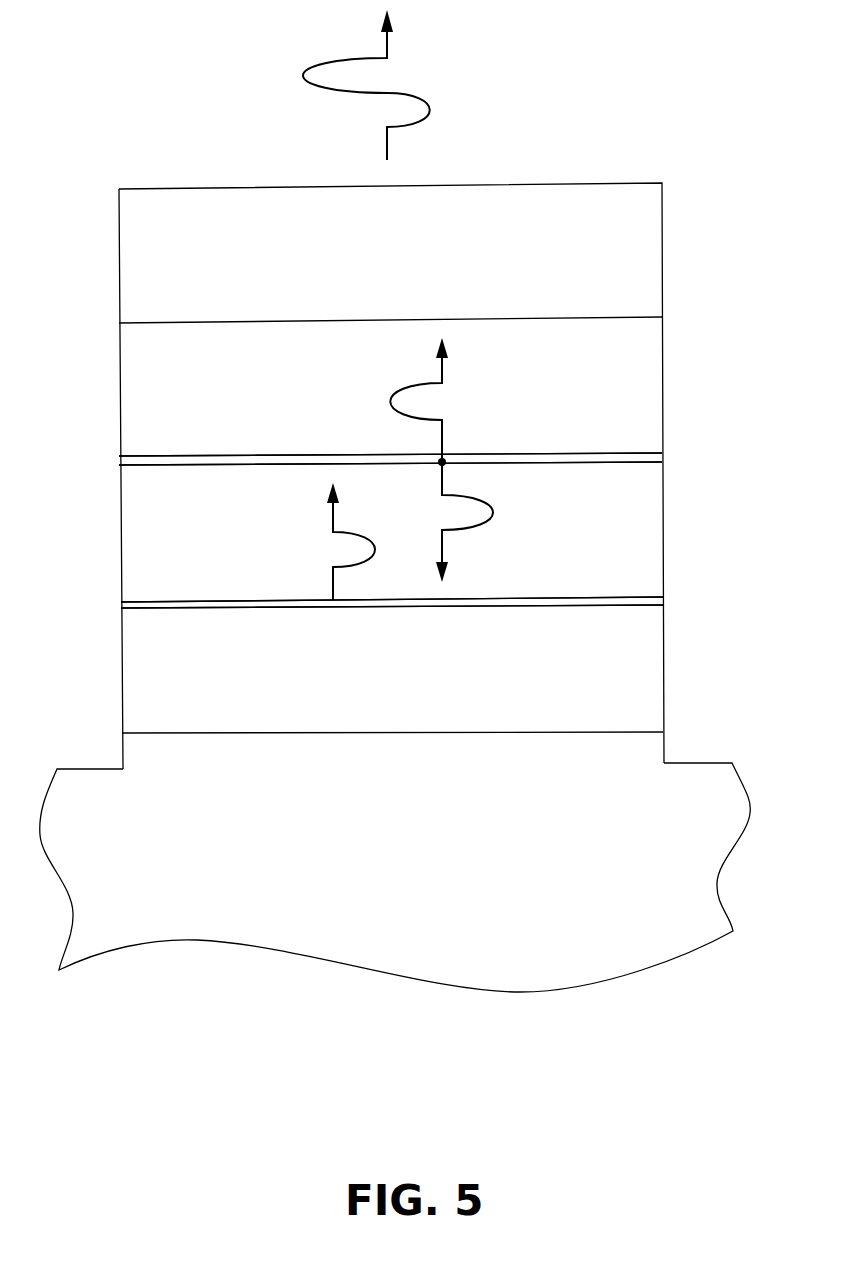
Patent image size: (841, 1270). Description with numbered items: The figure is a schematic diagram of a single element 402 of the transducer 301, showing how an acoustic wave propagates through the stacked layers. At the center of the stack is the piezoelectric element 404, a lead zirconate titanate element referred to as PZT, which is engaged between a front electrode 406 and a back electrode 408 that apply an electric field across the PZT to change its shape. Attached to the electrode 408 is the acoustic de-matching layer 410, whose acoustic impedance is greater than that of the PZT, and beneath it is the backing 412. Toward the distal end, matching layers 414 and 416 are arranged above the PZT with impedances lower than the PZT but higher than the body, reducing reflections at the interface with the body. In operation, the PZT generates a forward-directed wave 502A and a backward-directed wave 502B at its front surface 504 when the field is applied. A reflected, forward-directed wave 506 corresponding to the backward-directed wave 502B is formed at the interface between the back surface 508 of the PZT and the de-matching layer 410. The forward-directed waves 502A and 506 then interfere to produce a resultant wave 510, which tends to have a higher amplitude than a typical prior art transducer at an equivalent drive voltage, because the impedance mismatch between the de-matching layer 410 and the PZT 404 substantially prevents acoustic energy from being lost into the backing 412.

The transducer 301 is at (120, 78).
The transducer element 402 is at (526, 166).
The piezoelectric element 404 is at (185, 560).
The electrode 406 is at (663, 456).
The electrode 408 is at (663, 600).
The acoustic de-matching layer 410 is at (186, 712).
The backing 412 is at (187, 803).
The matching layer 414 is at (183, 428).
The matching layer 416 is at (183, 295).
The forward-directed wave 502A is at (442, 437).
The backward-directed wave 502B is at (447, 548).
The front surface 504 is at (570, 460).
The reflected wave 506 is at (333, 582).
The back surface 508 is at (570, 600).
The resultant wave 510 is at (388, 143).